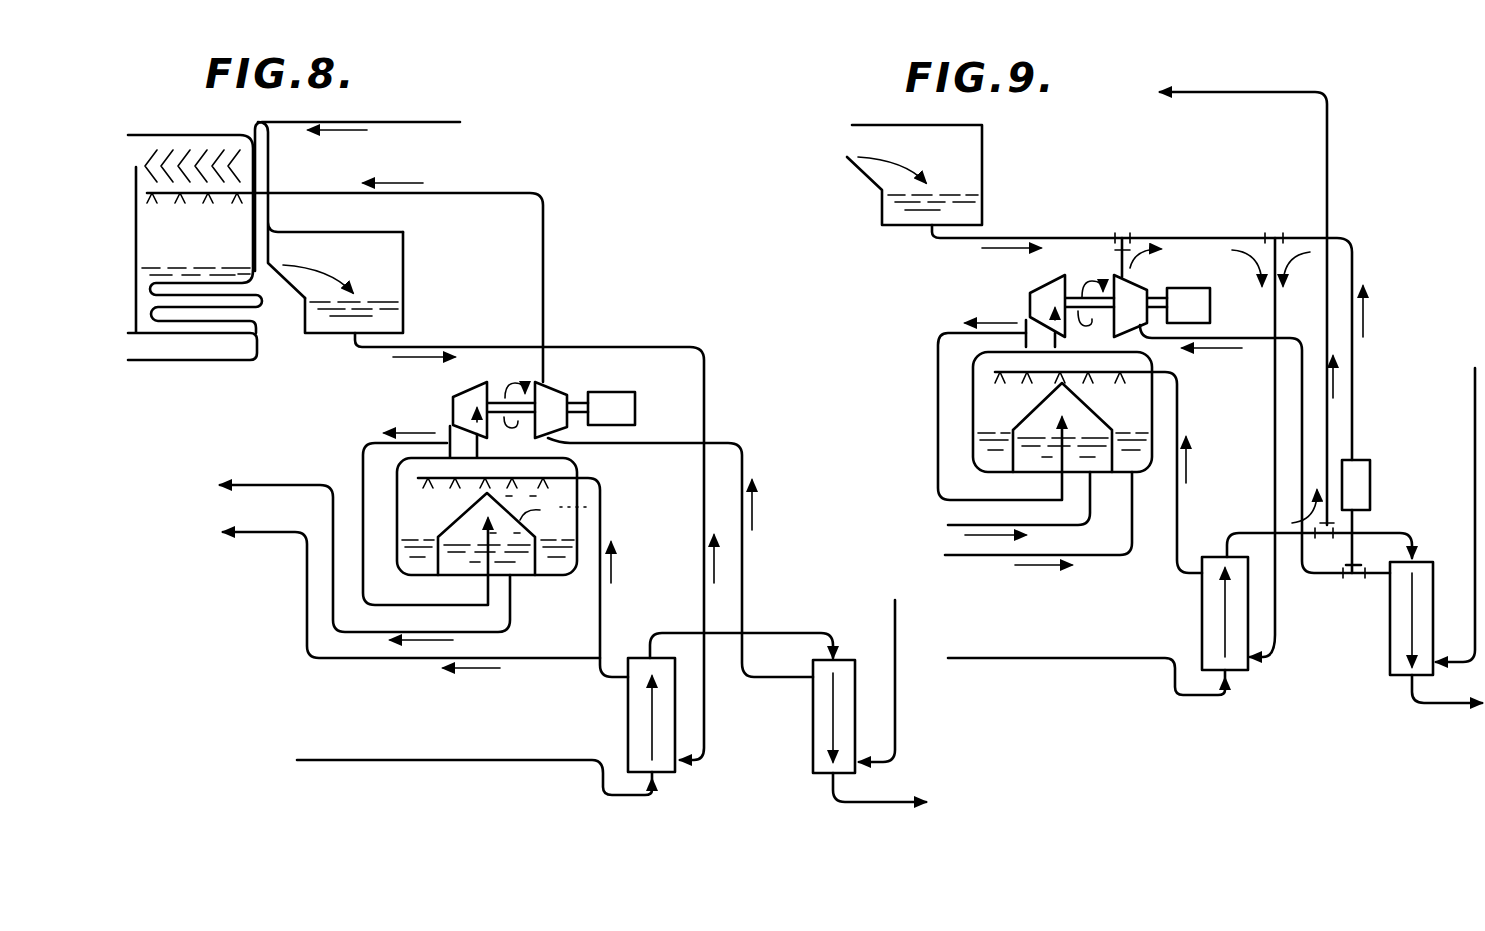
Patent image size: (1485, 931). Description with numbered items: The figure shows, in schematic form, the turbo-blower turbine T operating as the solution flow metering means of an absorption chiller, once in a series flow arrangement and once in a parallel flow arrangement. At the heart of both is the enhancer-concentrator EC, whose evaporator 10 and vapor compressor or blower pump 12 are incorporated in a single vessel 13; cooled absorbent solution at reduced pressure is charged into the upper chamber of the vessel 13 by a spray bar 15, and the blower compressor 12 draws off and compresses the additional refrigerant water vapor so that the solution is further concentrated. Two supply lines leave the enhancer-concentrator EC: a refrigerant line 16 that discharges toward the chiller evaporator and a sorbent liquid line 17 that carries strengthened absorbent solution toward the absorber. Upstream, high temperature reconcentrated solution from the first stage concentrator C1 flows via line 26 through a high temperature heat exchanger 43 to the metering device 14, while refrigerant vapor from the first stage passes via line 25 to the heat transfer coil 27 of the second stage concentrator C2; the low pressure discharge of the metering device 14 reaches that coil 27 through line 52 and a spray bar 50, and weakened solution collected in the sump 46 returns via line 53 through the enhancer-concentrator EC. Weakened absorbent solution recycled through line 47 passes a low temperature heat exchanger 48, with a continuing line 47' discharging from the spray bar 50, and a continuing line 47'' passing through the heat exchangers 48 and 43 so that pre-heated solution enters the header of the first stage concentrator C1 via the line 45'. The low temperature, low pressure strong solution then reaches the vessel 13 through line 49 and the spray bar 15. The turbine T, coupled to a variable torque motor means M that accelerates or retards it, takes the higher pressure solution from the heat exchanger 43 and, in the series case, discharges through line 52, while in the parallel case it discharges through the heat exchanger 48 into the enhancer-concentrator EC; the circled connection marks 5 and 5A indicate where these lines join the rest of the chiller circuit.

In FIG. 8, the evaporator 10 is at (577, 520).
In FIG. 9, the evaporator 10 is at (1153, 416).
In FIG. 8, the vapor compressor or blower pump 12 is at (460, 397).
In FIG. 9, the vapor compressor or blower pump 12 is at (1050, 280).
In FIG. 8, the vessel 13 is at (449, 440).
In FIG. 9, the vessel 13 is at (1030, 330).
In FIG. 9, the metering device 14 is at (1370, 480).
In FIG. 8, the spray bar 15 is at (563, 483).
In FIG. 9, the spray bar 15 is at (1153, 392).
In FIG. 8, the refrigerant line 16 is at (330, 574).
In FIG. 8, the sorbent liquid line 17 is at (307, 592).
In FIG. 8, the line 25 is at (417, 122).
In FIG. 8, the line 26 is at (897, 723).
In FIG. 9, the line 26 is at (1473, 487).
In FIG. 8, the heat transfer coil 27 is at (257, 308).
In FIG. 8, the high temperature heat exchanger 43 is at (813, 723).
In FIG. 9, the high temperature heat exchanger 43 is at (1390, 637).
In FIG. 8, the line 45' is at (879, 808).
In FIG. 9, the line 45' is at (1424, 715).
In FIG. 8, the sump 46 is at (393, 323).
In FIG. 9, the sump 46 is at (972, 212).
In FIG. 8, the line 47 is at (474, 779).
In FIG. 9, the line 47 is at (1086, 676).
In FIG. 9, the continuing line 47' is at (1247, 315).
In FIG. 8, the continuing line 47'' is at (731, 626).
In FIG. 9, the continuing line 47'' is at (1308, 524).
In FIG. 8, the low temperature heat exchanger 48 is at (628, 700).
In FIG. 9, the low temperature heat exchanger 48 is at (1202, 615).
In FIG. 8, the line 49 is at (600, 665).
In FIG. 9, the line 49 is at (1173, 563).
In FIG. 8, the spray bar 50 is at (236, 196).
In FIG. 8, the line 52 is at (400, 193).
In FIG. 9, the line 52 is at (1305, 430).
In FIG. 8, the line 53 is at (515, 345).
In FIG. 9, the line 53 is at (1083, 240).
In FIG. 8, the circled reference 5 is at (617, 475).
In FIG. 9, the circled reference 5 is at (1192, 370).
In FIG. 8, the circled reference 5A is at (296, 512).
In FIG. 9, the circled reference 5A is at (1016, 519).
In FIG. 8, the first stage concentrator C1 is at (874, 673).
In FIG. 9, the first stage concentrator C1 is at (1455, 502).
In FIG. 8, the second stage concentrator C2 is at (207, 132).
In FIG. 9, the second stage concentrator C2 is at (890, 120).
In FIG. 8, the turbine T is at (560, 378).
In FIG. 9, the turbine T is at (1167, 274).
In FIG. 8, the variable torque motor means M is at (611, 408).
In FIG. 9, the variable torque motor means M is at (1188, 305).
In FIG. 8, the enhancer-concentrator EC is at (398, 472).
In FIG. 9, the enhancer-concentrator EC is at (969, 349).